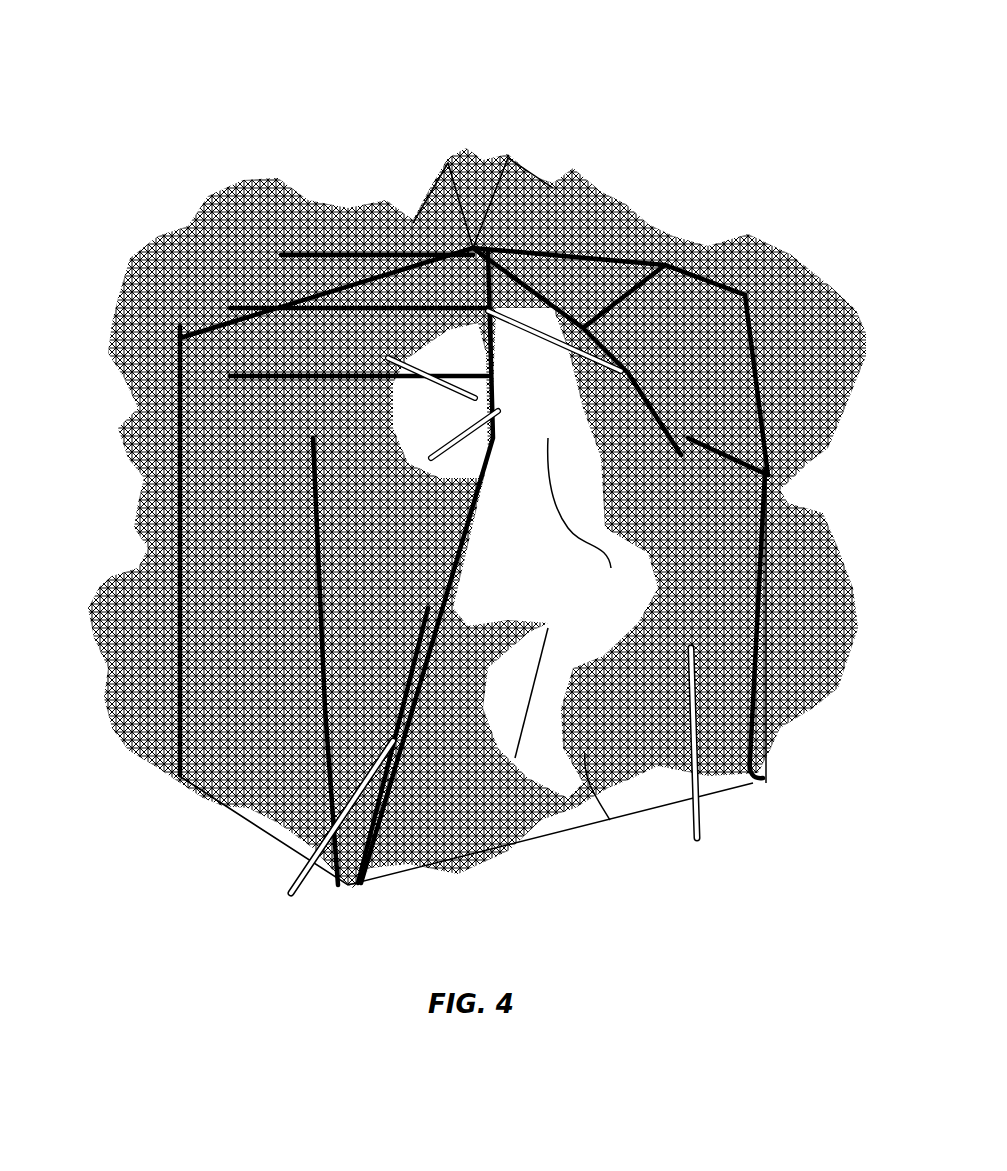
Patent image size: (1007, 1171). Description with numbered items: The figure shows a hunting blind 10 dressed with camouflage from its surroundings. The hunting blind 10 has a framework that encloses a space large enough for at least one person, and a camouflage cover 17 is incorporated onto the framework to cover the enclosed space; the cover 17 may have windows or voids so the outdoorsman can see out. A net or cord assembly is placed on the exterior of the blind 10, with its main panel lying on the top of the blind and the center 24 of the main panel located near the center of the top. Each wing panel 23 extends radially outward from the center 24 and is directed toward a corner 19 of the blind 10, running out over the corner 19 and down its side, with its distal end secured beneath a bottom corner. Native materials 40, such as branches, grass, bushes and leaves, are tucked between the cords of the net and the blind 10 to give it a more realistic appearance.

The hunting blind 10 is at (732, 122).
The camouflage cover 17 is at (625, 797).
The corner 19 is at (765, 483).
The wing panel 23 is at (305, 803).
The center 24 is at (500, 142).
The native materials 40 is at (170, 235).